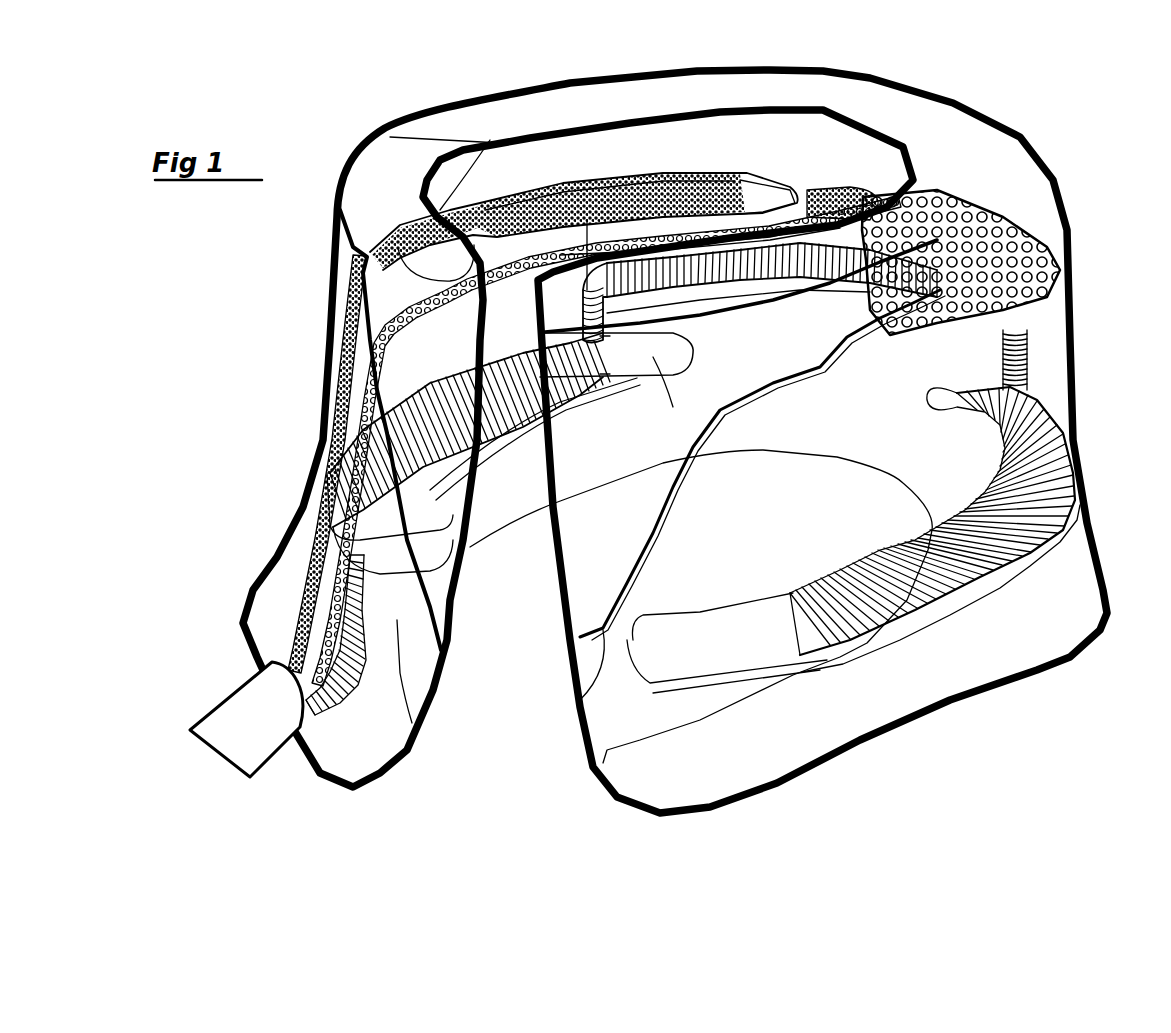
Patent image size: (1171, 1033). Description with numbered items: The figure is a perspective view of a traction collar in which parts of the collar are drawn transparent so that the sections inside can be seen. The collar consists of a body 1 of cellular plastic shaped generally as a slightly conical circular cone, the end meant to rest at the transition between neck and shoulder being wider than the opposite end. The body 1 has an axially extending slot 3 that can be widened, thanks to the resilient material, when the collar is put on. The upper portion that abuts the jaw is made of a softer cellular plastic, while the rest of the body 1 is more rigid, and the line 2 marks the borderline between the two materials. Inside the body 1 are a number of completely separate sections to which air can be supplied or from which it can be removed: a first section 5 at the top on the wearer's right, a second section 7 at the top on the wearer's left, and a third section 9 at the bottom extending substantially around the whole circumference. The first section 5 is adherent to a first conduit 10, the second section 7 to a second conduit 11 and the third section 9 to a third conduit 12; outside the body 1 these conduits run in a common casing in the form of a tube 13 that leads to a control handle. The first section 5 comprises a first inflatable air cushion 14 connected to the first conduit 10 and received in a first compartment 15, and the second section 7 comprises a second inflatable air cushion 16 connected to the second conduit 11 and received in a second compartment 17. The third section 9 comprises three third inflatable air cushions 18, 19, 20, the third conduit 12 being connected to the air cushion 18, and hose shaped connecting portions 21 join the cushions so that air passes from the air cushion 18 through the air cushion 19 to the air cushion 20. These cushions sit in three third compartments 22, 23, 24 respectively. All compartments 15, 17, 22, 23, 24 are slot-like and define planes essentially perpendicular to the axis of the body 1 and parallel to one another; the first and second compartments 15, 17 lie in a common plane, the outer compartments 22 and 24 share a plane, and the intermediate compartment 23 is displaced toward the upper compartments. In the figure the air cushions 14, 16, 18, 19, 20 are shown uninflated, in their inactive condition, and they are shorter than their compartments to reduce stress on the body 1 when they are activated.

The body 1 is at (1023, 120).
The line 2 is at (990, 248).
The slot 3 is at (512, 745).
The first section 5 is at (528, 168).
The second section 7 is at (966, 190).
The third section 9 is at (497, 455).
The first conduit 10 is at (303, 593).
The second conduit 11 is at (327, 697).
The third conduit 12 is at (340, 688).
The tube 13 is at (280, 752).
The first inflatable air cushion 14 is at (677, 172).
The first compartment 15 is at (775, 185).
The second inflatable air cushion 16 is at (980, 203).
The second compartment 17 is at (887, 357).
The third inflatable air cushion 18 is at (508, 382).
The third inflatable air cushion 19 is at (735, 265).
The third inflatable air cushion 20 is at (860, 642).
The hose shaped connecting portions 21 is at (1037, 345).
The third compartment 22 is at (653, 357).
The third compartment 23 is at (590, 300).
The third compartment 24 is at (713, 657).